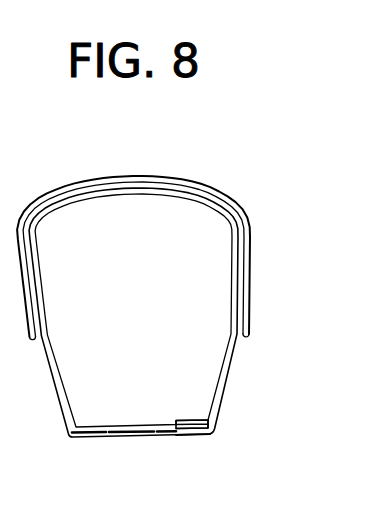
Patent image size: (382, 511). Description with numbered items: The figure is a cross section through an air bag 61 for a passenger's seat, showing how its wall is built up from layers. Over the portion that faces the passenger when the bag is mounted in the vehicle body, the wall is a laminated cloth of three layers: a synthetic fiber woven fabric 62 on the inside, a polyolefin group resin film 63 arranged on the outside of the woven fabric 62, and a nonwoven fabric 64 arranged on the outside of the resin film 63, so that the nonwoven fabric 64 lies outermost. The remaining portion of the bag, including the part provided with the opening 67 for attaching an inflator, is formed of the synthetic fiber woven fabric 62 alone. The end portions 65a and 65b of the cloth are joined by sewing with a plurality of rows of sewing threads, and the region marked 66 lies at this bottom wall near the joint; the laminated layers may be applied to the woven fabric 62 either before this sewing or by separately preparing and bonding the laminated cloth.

The air bag for the passenger's seat 61 is at (226, 167).
The synthetic fiber woven fabric 62 is at (231, 357).
The polyolefin group resin film 63 is at (238, 268).
The nonwoven fabric 64 is at (257, 246).
The end portion 65a is at (178, 421).
The end portion 65b is at (209, 432).
The bottom wall 66 is at (195, 436).
The opening for attaching an inflator 67 is at (132, 429).